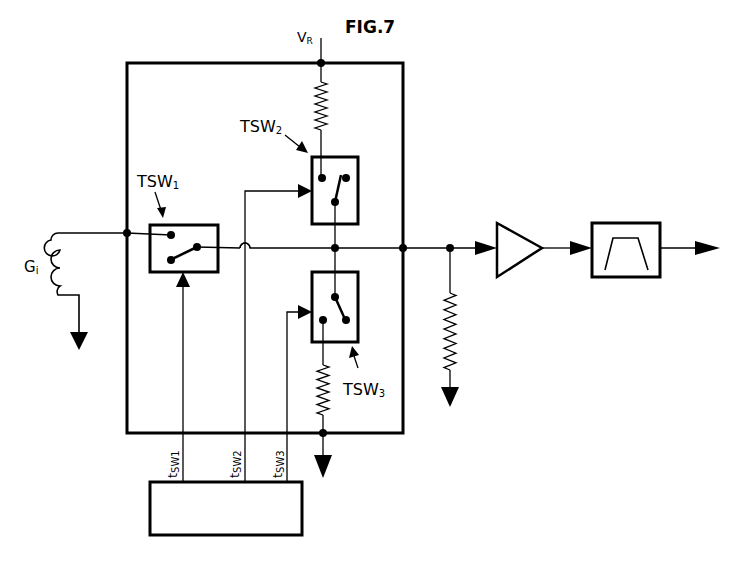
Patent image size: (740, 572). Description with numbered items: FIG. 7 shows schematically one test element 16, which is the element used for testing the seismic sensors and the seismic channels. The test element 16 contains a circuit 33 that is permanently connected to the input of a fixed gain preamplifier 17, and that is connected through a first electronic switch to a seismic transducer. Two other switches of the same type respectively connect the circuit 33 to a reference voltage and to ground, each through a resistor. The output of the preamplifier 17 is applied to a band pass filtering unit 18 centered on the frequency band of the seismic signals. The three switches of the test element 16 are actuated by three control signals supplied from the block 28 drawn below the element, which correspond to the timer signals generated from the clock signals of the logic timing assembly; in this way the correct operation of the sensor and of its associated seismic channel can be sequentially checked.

The test element 16 is at (420, 113).
The fixed gain preamplifier 17 is at (502, 222).
The band pass filtering unit 18 is at (608, 223).
The control unit 28 is at (302, 515).
The circuit 33 is at (255, 250).